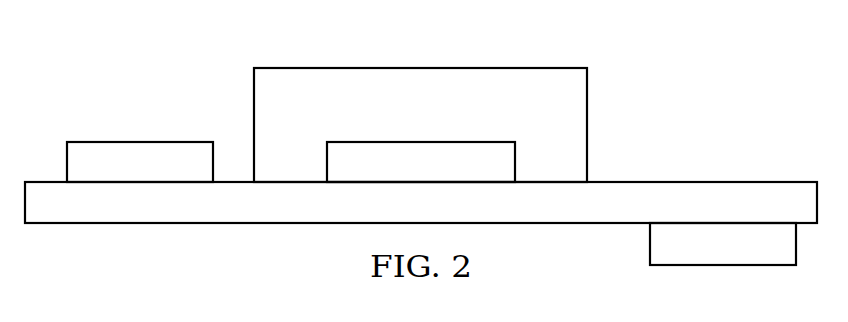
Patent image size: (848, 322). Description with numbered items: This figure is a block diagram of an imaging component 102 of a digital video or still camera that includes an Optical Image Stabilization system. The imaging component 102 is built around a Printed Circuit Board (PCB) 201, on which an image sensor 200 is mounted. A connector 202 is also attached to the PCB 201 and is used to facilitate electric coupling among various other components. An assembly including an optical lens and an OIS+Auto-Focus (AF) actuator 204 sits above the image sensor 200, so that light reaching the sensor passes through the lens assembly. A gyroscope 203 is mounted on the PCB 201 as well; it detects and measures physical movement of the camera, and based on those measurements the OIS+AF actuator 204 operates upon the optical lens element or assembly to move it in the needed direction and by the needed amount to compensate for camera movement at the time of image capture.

The imaging component 102 is at (233, 58).
The image sensor 200 is at (325, 160).
The Printed Circuit Board (PCB) 201 is at (235, 225).
The connector 202 is at (719, 266).
The gyroscope 203 is at (140, 140).
The OIS+Auto-Focus (AF) actuator 204 is at (421, 67).